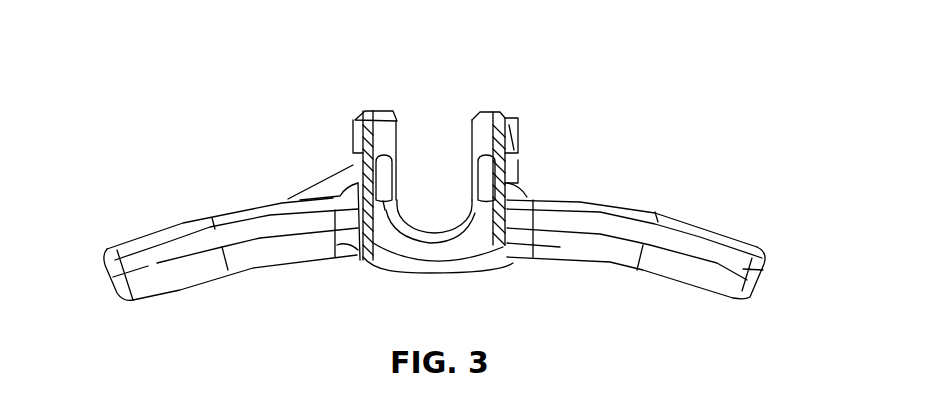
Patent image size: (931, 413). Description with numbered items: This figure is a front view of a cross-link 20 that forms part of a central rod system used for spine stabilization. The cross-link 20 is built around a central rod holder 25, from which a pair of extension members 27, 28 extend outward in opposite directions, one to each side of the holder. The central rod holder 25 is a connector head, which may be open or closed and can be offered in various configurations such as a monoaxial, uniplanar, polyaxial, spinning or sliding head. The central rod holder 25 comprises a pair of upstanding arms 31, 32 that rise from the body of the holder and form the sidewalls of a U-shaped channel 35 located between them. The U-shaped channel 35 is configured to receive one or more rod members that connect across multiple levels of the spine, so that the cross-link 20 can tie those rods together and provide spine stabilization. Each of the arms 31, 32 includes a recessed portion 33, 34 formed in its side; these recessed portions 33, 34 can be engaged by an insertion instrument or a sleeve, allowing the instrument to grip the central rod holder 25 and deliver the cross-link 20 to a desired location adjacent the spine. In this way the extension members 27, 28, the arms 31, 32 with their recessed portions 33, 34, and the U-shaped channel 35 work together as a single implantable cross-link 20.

The cross-link 20 is at (517, 120).
The central rod holder 25 is at (488, 110).
The extension member 27 is at (232, 207).
The extension member 28 is at (656, 211).
The arm 31 is at (353, 147).
The arm 32 is at (518, 138).
The recessed portion 33 is at (353, 158).
The recessed portion 34 is at (512, 158).
The U-shaped channel 35 is at (397, 147).